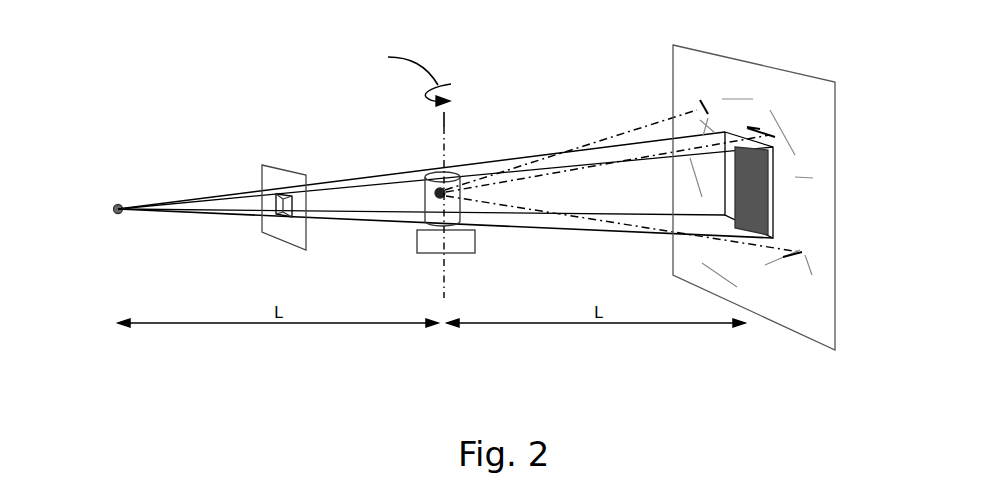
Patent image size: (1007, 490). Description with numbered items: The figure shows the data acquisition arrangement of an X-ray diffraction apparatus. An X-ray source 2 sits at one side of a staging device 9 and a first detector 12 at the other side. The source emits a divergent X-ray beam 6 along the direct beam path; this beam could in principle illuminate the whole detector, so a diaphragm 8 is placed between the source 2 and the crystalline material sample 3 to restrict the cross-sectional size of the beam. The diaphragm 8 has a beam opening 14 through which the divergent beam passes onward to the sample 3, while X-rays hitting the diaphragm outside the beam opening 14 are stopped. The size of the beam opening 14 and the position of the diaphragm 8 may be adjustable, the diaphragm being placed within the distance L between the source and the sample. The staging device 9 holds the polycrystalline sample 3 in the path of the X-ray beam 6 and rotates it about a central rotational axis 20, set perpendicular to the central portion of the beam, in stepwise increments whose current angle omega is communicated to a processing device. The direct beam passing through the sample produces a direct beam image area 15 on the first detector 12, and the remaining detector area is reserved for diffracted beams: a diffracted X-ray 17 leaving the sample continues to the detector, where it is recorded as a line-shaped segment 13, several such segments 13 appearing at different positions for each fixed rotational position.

The X-ray source 2 is at (118, 214).
The crystalline material sample 3 is at (428, 192).
The X-ray beam 6 is at (332, 181).
The diaphragm 8 is at (291, 234).
The staging device 9 is at (428, 243).
The first detector 12 is at (697, 67).
The line-shaped segment 13 is at (705, 108).
The beam opening 14 is at (281, 201).
The direct beam image area 15 is at (772, 188).
The diffracted X-ray 17 is at (628, 130).
The rotational axis 20 is at (445, 125).